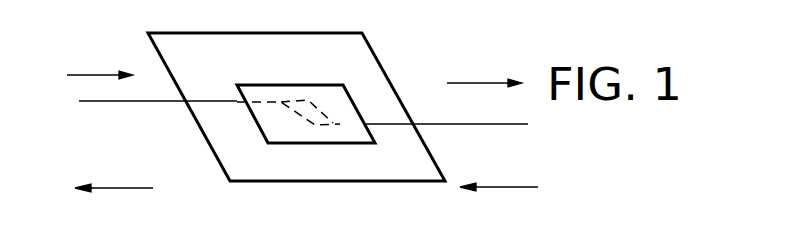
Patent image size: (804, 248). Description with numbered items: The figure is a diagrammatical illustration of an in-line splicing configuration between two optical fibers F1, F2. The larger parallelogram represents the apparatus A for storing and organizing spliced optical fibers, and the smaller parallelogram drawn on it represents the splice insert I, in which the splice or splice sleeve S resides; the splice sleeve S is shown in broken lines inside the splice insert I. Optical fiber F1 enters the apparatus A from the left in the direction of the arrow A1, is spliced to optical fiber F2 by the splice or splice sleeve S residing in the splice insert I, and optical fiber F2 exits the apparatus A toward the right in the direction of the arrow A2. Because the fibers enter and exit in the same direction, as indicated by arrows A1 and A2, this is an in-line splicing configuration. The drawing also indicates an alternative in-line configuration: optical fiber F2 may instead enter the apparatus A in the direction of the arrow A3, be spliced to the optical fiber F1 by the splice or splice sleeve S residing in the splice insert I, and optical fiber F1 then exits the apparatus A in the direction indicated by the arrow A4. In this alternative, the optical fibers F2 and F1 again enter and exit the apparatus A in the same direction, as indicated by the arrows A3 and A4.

The apparatus A is at (375, 56).
The splice or splice sleeve S is at (333, 123).
The splice insert I is at (352, 143).
The optical fiber F1 is at (105, 101).
The optical fiber F2 is at (478, 124).
The arrow A1 is at (105, 73).
The arrow A2 is at (487, 80).
The arrow A3 is at (502, 187).
The arrow A4 is at (140, 188).